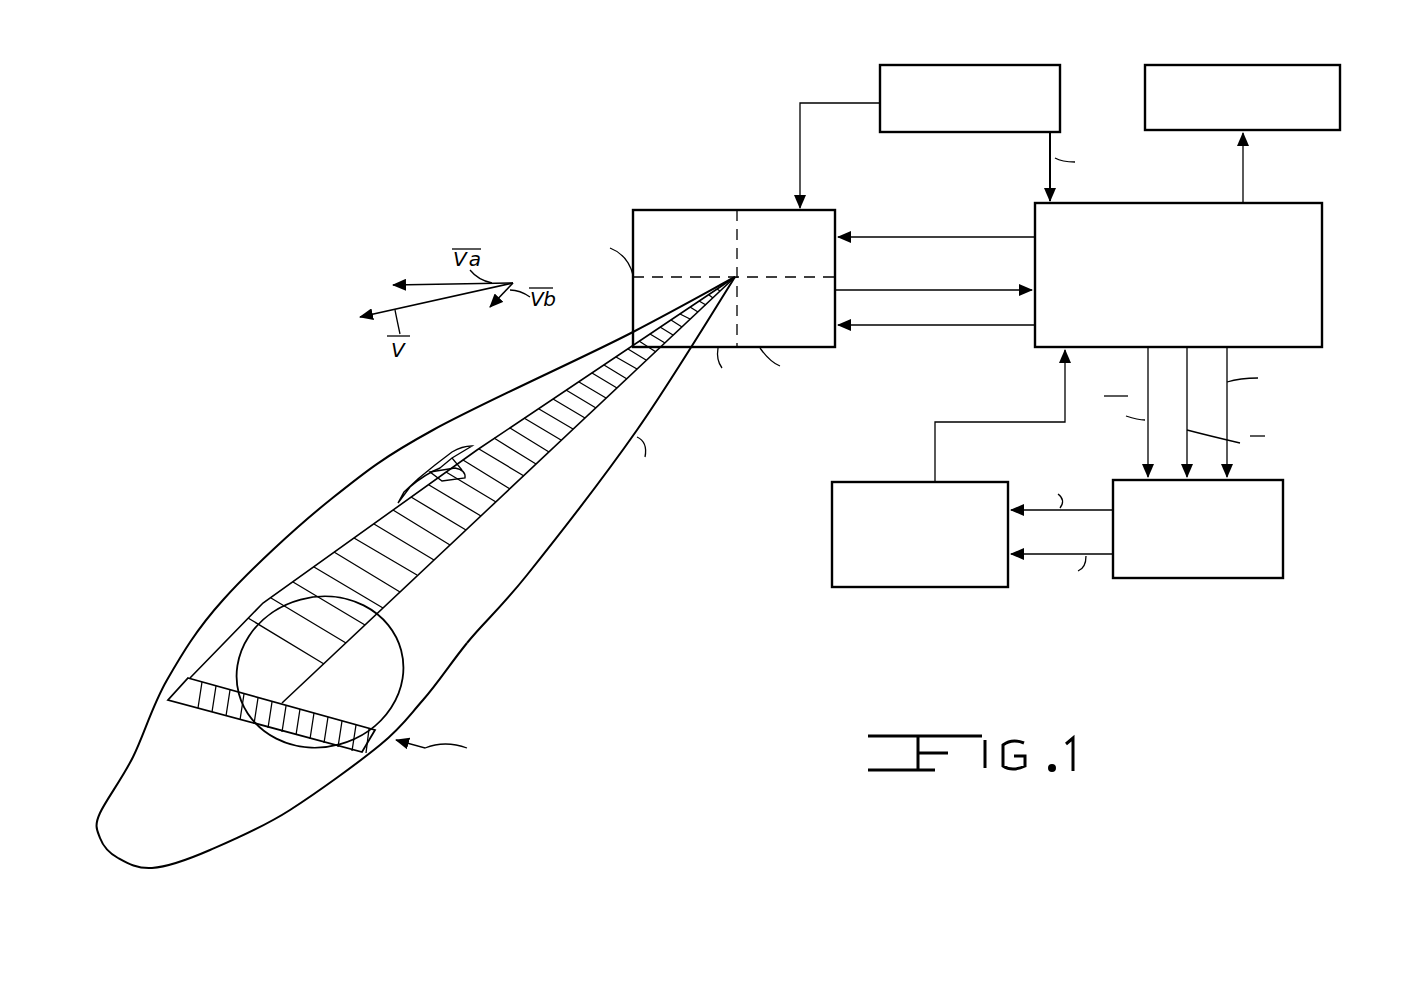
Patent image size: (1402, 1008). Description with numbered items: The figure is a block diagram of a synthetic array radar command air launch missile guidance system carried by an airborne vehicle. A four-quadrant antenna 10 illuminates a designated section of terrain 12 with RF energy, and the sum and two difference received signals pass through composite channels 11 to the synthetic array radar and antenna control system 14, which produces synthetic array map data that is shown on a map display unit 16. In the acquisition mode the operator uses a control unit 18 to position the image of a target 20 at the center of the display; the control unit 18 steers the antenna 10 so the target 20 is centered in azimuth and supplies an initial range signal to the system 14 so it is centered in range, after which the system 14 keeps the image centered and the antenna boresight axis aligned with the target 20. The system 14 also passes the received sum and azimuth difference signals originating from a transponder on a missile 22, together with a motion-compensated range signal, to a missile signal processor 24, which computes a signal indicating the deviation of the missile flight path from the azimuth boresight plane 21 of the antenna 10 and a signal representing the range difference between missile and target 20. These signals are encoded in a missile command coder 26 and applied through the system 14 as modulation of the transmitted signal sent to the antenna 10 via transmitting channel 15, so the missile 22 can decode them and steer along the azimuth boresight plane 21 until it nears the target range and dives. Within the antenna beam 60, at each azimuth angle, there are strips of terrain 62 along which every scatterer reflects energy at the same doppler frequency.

The four-quadrant antenna 10 is at (812, 352).
The composite channels 11 is at (915, 293).
The designated section of terrain 12 is at (343, 793).
The synthetic array radar and antenna control system 14 is at (1323, 265).
The transmitting channel 15 is at (913, 325).
The map display unit 16 is at (1290, 132).
The control unit 18 is at (928, 133).
The target 20 is at (272, 727).
The azimuth boresight plane 21 is at (258, 602).
The missile 22 is at (417, 470).
The missile signal processor 24 is at (1208, 580).
The missile command coder 26 is at (906, 588).
The beam 60 is at (530, 558).
The terrain strips 62 is at (333, 727).